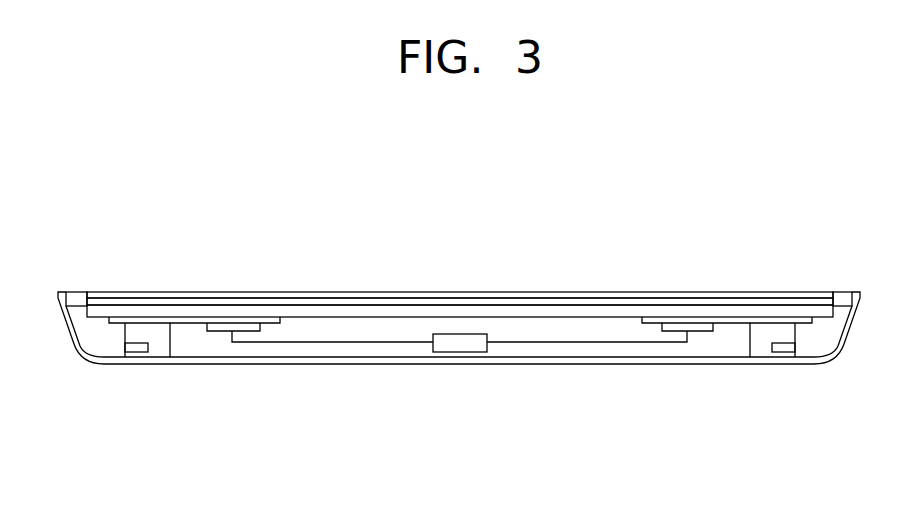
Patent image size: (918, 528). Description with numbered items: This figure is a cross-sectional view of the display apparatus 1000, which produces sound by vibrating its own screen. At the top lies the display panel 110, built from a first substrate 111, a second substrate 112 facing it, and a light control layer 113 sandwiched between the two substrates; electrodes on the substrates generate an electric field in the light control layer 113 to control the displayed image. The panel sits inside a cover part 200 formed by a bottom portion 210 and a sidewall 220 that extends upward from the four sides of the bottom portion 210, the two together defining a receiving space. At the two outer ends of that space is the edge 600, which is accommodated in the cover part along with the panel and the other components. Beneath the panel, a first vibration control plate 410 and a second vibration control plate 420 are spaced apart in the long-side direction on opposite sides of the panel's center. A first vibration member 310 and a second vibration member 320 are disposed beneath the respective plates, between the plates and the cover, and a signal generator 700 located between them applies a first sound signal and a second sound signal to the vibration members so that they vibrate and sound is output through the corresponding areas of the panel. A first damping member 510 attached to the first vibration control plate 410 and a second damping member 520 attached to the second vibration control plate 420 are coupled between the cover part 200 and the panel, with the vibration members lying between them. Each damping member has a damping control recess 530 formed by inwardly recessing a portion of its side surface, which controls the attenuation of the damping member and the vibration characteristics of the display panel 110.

The display apparatus 1000 is at (635, 224).
The display panel 110 is at (308, 228).
The first substrate 111 is at (423, 312).
The second substrate 112 is at (313, 296).
The light control layer 113 is at (366, 303).
The cover part 200 is at (142, 428).
The bottom portion 210 is at (117, 358).
The sidewall 220 is at (72, 332).
The first vibration member 310 is at (246, 327).
The second vibration member 320 is at (683, 330).
The first vibration control plate 410 is at (188, 319).
The second vibration control plate 420 is at (742, 319).
The first damping member 510 is at (140, 333).
The second damping member 520 is at (760, 357).
The damping control recess 530 is at (140, 352).
The edge 600 is at (75, 291).
The signal generator 700 is at (465, 352).